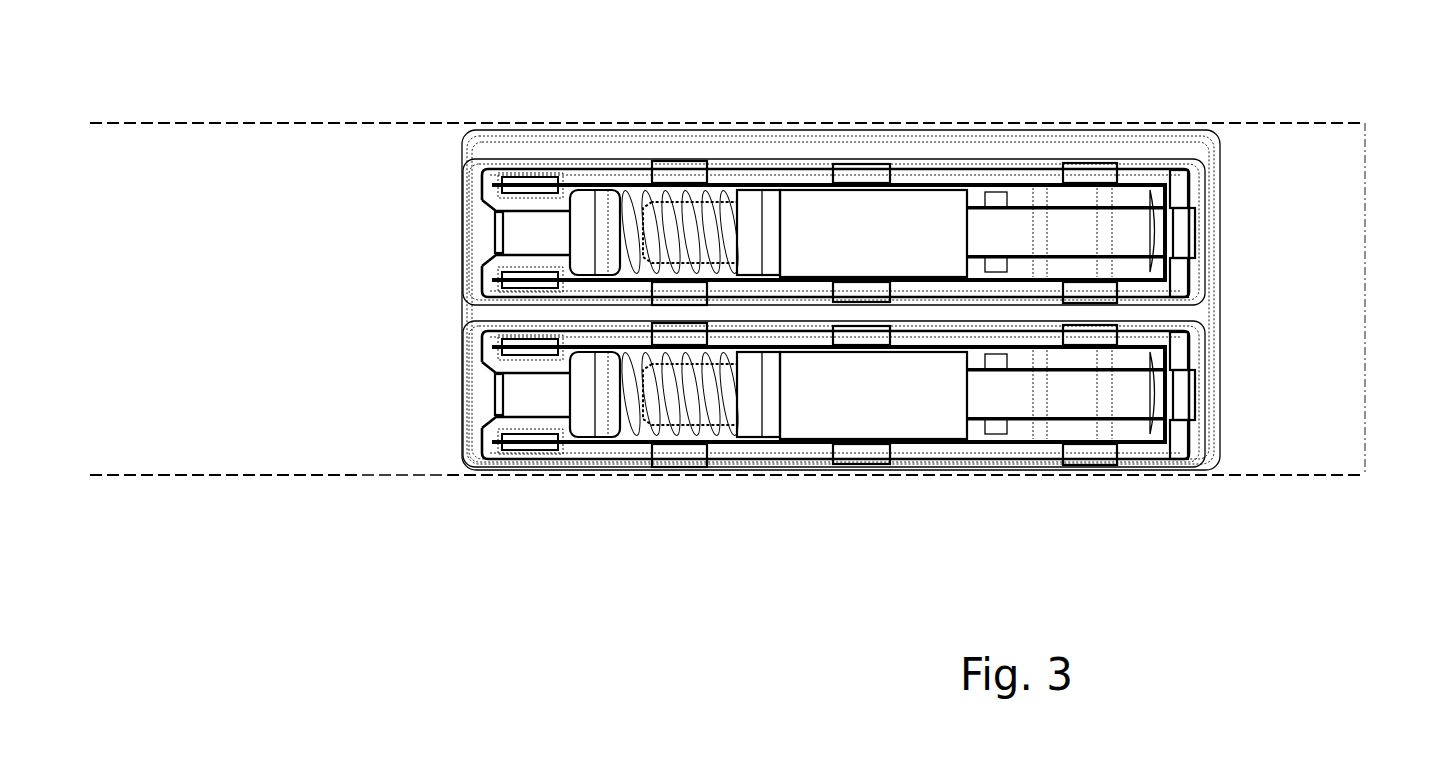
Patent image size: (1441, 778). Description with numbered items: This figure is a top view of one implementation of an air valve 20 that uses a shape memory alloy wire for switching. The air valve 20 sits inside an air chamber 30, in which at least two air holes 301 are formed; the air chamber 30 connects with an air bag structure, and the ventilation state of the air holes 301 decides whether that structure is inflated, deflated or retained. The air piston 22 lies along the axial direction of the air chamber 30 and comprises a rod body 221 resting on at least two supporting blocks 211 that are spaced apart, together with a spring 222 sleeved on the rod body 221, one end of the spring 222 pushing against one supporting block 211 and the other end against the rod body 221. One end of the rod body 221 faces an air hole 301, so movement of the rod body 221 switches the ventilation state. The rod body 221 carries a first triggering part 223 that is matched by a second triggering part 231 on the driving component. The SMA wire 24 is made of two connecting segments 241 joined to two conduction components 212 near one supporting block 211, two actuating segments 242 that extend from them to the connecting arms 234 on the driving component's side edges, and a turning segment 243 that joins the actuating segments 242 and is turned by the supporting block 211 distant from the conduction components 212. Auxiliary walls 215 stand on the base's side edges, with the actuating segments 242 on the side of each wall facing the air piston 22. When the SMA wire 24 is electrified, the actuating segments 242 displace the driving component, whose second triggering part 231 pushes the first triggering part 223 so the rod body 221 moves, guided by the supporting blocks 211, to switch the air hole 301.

The air valve 20 is at (978, 172).
The air piston 22 is at (504, 209).
The SMA wire 24 is at (1133, 172).
The air chamber 30 is at (1018, 170).
The supporting block 211 is at (610, 210).
The conduction component 212 is at (527, 177).
The auxiliary wall 215 is at (1087, 170).
The rod body 221 is at (682, 200).
The spring 222 is at (705, 172).
The first triggering part 223 is at (748, 210).
The second triggering part 231 is at (848, 215).
The connecting arm 234 is at (868, 172).
The connecting segment 241 is at (548, 183).
The actuating segment 242 is at (797, 230).
The turning segment 243 is at (1196, 236).
The air hole 301 is at (470, 192).